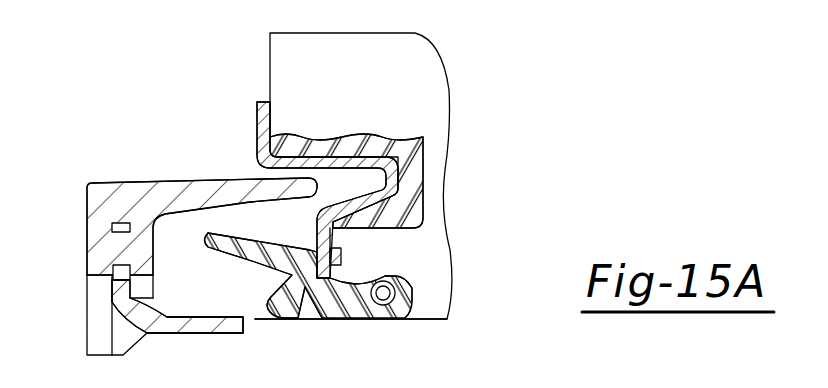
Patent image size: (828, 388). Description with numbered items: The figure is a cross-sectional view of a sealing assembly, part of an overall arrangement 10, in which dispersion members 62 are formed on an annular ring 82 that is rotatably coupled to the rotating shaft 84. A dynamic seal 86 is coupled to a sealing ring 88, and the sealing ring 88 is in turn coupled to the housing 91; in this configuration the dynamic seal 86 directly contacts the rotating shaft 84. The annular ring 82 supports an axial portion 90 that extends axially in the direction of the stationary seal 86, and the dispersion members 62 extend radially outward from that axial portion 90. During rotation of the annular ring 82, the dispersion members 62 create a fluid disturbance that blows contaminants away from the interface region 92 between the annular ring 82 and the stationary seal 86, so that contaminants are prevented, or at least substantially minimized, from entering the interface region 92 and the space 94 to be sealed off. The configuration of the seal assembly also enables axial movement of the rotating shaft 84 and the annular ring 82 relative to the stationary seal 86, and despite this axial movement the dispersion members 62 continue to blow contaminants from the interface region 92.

The seal assembly 10 is at (213, 88).
The dispersion member 62 is at (124, 182).
The annular ring 82 is at (195, 333).
The rotating shaft 84 is at (400, 359).
The dynamic seal 86 is at (370, 232).
The sealing ring 88 is at (257, 117).
The axial portion 90 is at (178, 208).
The housing 91 is at (387, 90).
The interface region 92 is at (294, 236).
The space 94 is at (445, 259).